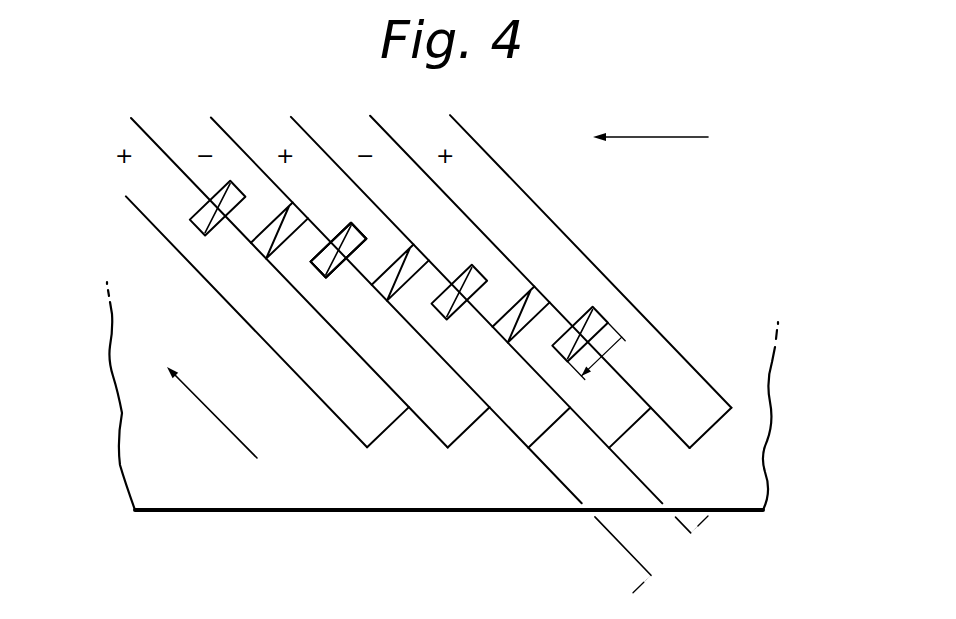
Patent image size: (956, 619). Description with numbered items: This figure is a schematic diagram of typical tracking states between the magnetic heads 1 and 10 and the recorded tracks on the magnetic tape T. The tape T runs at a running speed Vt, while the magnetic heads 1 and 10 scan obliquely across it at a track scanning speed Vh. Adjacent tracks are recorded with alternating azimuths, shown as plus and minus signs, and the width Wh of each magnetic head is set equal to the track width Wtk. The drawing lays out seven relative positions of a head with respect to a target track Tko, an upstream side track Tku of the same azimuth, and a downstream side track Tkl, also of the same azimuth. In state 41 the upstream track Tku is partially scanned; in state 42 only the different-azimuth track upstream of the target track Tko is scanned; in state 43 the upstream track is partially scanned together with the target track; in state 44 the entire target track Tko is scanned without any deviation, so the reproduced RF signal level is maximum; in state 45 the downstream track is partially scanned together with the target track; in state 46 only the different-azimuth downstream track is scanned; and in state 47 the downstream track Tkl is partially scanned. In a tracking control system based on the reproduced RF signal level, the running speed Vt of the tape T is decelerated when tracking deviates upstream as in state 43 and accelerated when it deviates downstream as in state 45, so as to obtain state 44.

The magnetic head 1 is at (349, 224).
The magnetic head 10 is at (339, 250).
The state 41 is at (607, 323).
The state 42 is at (527, 308).
The state 43 is at (487, 280).
The state 44 is at (415, 252).
The state 45 is at (325, 278).
The state 46 is at (264, 260).
The state 47 is at (190, 222).
The magnetic tape T is at (244, 512).
The downstream side track Tkl is at (367, 448).
The target track Tko is at (528, 448).
The upstream side track Tku is at (690, 448).
The head width Wh is at (618, 357).
The track width Wtk is at (670, 554).
The running speed of the magnetic tape Vt is at (650, 119).
The track scanning speed Vh is at (223, 425).